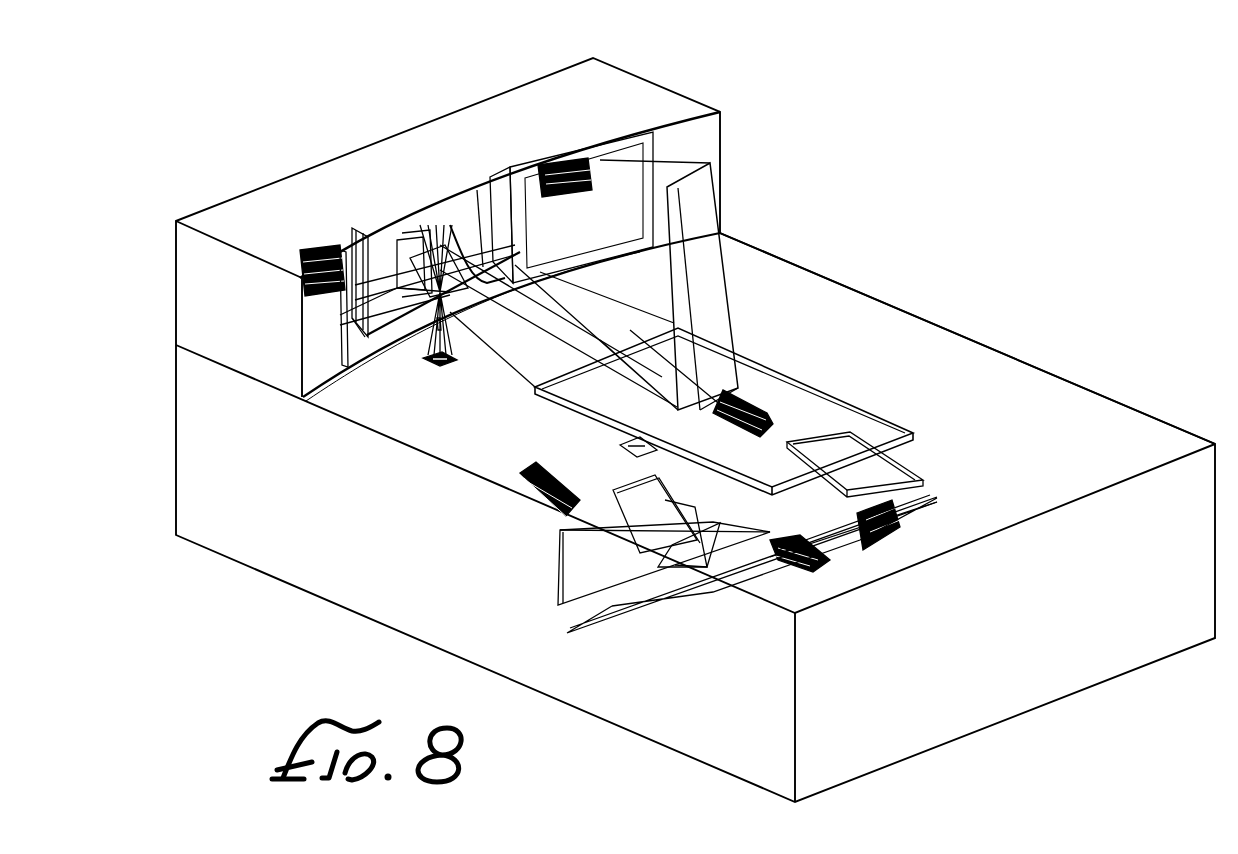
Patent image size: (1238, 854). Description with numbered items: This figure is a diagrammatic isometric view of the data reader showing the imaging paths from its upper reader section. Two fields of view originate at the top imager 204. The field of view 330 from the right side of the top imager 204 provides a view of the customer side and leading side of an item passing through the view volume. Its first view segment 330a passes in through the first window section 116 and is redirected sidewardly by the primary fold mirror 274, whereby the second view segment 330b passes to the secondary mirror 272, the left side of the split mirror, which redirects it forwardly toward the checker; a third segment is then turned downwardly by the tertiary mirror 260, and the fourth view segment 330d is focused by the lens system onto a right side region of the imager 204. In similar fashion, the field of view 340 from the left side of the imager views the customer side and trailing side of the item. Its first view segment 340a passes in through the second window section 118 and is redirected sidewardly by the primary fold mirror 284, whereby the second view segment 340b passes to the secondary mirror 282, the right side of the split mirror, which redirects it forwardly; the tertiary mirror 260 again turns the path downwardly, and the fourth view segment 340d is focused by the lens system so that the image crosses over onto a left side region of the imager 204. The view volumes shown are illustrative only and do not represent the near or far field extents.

The first window section 116 is at (337, 372).
The second window section 118 is at (618, 157).
The top imager 204 is at (437, 367).
The tertiary mirror 260 is at (455, 230).
The secondary mirror 272 is at (402, 230).
The primary fold mirror 274 is at (357, 327).
The secondary mirror 282 is at (422, 230).
The primary fold mirror 284 is at (490, 175).
The field of view 330 is at (508, 362).
The first view segment 330a is at (472, 352).
The second view segment 330b is at (350, 352).
The fourth view segment 330d is at (425, 330).
The field of view 340 is at (628, 165).
The first view segment 340a is at (660, 147).
The second view segment 340b is at (482, 235).
The fourth view segment 340d is at (440, 312).